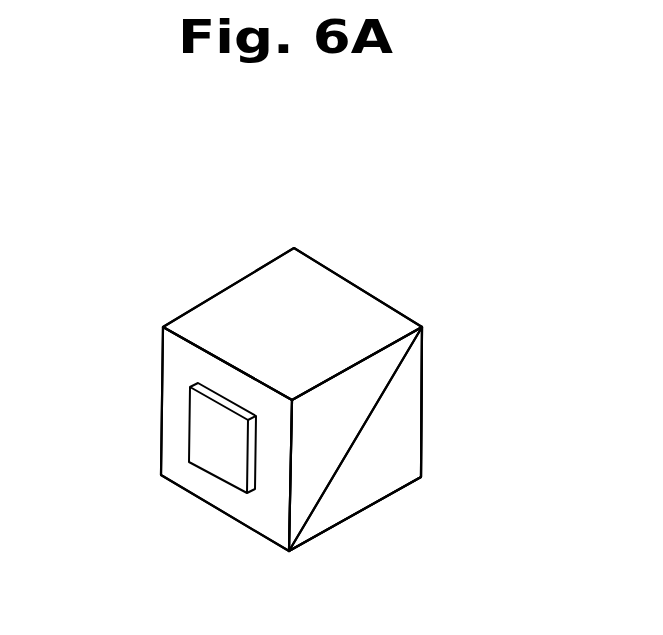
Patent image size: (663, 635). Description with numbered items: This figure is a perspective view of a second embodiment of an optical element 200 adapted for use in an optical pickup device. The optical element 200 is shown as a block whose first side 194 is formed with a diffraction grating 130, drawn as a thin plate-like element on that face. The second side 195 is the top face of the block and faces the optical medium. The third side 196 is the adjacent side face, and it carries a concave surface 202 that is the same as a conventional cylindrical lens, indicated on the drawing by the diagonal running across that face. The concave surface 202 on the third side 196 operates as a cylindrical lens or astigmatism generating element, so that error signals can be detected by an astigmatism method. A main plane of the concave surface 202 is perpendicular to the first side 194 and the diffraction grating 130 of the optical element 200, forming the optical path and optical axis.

The optical element 200 is at (264, 258).
The second side 195 is at (329, 313).
The third side 196 is at (323, 535).
The concave surface 202 is at (390, 495).
The first side 194 is at (278, 495).
The diffraction grating 130 is at (215, 445).